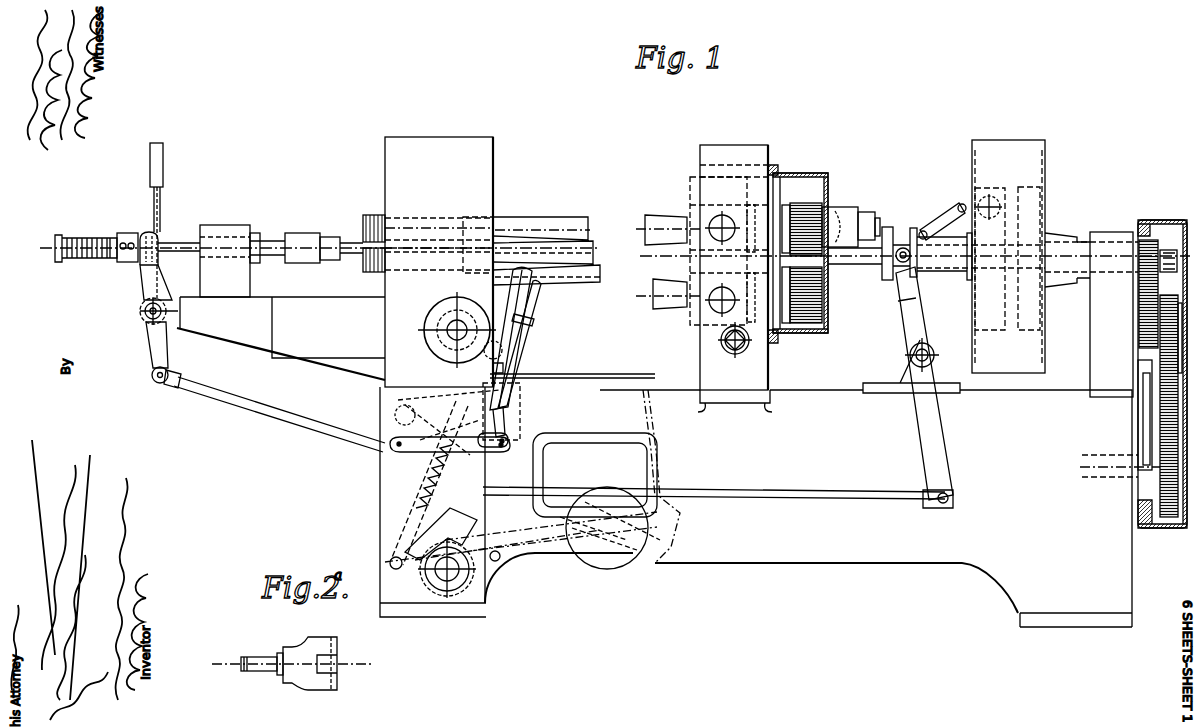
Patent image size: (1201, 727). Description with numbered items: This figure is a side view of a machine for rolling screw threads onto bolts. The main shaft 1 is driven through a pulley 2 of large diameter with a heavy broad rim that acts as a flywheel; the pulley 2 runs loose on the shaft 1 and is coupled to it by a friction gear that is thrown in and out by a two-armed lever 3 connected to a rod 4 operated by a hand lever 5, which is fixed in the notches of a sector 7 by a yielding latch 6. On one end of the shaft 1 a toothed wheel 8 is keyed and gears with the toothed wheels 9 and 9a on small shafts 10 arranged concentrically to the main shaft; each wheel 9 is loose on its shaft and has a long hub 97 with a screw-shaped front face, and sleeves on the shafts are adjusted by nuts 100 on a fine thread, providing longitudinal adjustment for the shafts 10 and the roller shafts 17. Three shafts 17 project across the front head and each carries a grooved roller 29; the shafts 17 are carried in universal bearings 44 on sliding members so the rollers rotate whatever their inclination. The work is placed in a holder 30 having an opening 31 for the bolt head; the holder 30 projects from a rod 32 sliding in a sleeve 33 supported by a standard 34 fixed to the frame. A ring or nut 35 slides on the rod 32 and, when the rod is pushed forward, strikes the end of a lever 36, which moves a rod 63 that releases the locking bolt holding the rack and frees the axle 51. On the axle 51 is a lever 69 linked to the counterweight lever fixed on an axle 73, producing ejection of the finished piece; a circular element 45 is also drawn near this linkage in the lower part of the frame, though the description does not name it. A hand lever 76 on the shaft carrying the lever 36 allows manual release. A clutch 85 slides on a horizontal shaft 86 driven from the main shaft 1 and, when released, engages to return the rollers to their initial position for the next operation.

In FIG. 1, the main shaft 1 is at (952, 262).
In FIG. 1, the pulley 2 is at (1055, 268).
In FIG. 1, the two-armed lever 3 is at (911, 383).
In FIG. 1, the rod 4 is at (783, 490).
In FIG. 1, the hand lever 5 is at (515, 352).
In FIG. 1, the yielding latch 6 is at (507, 430).
In FIG. 1, the sector 7 is at (400, 447).
In FIG. 1, the toothed wheel 8 is at (825, 265).
In FIG. 1, the toothed wheel 9 is at (800, 180).
In FIG. 1, the toothed wheel 9a is at (850, 300).
In FIG. 1, the small shaft 10 is at (707, 267).
In FIG. 1, the shaft 17 is at (585, 193).
In FIG. 1, the roller 29 is at (373, 215).
In FIG. 1, the holder 30 is at (303, 233).
In FIG. 2A, the holder 30 is at (303, 690).
In FIG. 2A, the opening 31 is at (337, 657).
In FIG. 1, the rod 32 is at (260, 230).
In FIG. 2A, the rod 32 is at (260, 657).
In FIG. 1, the sleeve 33 is at (256, 233).
In FIG. 1, the standard 34 is at (220, 225).
In FIG. 1, the ring or nut 35 is at (120, 233).
In FIG. 1, the lever 36 is at (135, 262).
In FIG. 1, the universal bearing 44 is at (525, 553).
In FIG. 1, the cam disc 45 is at (620, 479).
In FIG. 1, the axle 51 is at (447, 330).
In FIG. 1, the rod 63 is at (252, 408).
In FIG. 1, the lever 69 is at (146, 312).
In FIG. 1, the axle 73 is at (443, 575).
In FIG. 1, the hand lever 76 is at (192, 157).
In FIG. 1, the clutch 85 is at (1168, 413).
In FIG. 1, the horizontal shaft 86 is at (1092, 480).
In FIG. 1, the hub 97 is at (821, 240).
In FIG. 1, the nut 100 is at (867, 221).